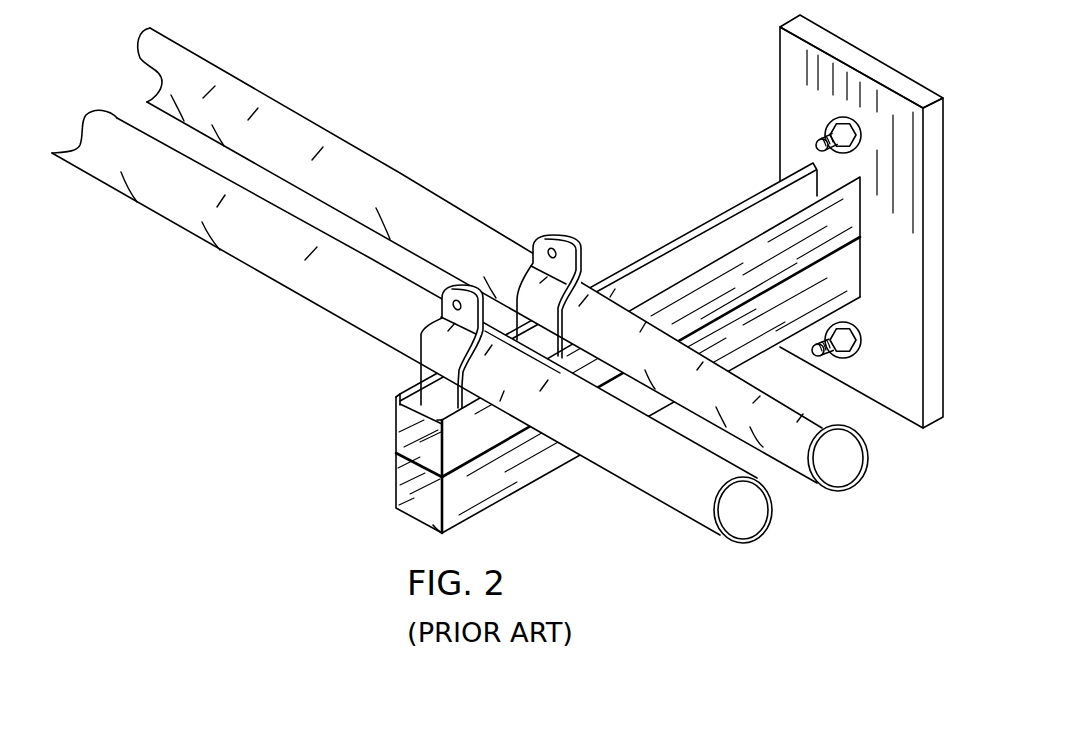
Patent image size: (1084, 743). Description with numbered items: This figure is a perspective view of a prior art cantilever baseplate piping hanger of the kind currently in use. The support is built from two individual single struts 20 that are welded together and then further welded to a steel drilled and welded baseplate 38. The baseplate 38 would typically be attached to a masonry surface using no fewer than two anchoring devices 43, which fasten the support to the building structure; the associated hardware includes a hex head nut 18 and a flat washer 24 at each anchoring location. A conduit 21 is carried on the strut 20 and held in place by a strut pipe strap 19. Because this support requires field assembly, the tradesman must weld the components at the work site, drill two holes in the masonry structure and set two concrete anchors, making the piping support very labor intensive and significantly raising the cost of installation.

The hex head nut 18 is at (827, 123).
The strut pipe strap 19 is at (467, 272).
The single strut 20 is at (420, 450).
The conduit 21 is at (280, 134).
The flat washer 24 is at (830, 120).
The drilled and welded baseplate 38 is at (800, 52).
The anchoring device 43 is at (813, 142).